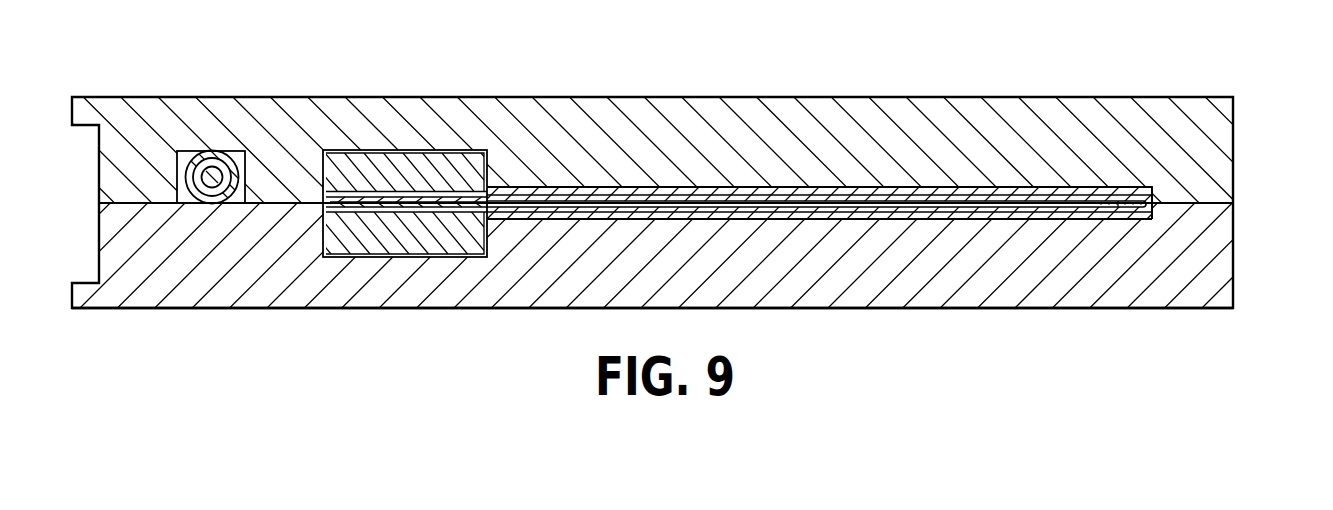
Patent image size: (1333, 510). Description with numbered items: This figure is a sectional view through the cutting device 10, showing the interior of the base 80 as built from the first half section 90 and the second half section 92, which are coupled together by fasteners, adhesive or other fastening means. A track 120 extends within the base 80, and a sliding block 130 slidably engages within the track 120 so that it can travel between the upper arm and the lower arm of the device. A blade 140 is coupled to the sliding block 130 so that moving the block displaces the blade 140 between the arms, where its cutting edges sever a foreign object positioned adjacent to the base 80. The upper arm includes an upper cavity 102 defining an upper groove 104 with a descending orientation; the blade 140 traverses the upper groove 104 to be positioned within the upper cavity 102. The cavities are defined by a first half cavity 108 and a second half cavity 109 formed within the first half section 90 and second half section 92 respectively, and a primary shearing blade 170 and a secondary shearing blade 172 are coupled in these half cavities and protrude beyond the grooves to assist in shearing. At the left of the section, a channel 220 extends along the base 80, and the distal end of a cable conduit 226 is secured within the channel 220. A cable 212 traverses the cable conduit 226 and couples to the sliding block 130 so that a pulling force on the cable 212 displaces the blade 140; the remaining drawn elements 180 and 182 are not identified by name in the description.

The cutting device 10 is at (998, 97).
The second half section 92 is at (551, 97).
The first half section 90 is at (512, 309).
The base 80 is at (270, 309).
The track 120 is at (380, 150).
The sliding block 130 is at (377, 247).
The blade 140 is at (688, 197).
The second half cavity 109 is at (823, 192).
The first half cavity 108 is at (946, 216).
The secondary shearing blade 172 is at (915, 192).
The primary shearing blade 170 is at (835, 212).
The fiber coating 182 is at (1077, 197).
The fiber core 180 is at (1048, 210).
The upper cavity 102 is at (1153, 196).
The upper groove 104 is at (1155, 208).
The channel 220 is at (182, 150).
The cable conduit 226 is at (222, 152).
The cable 212 is at (213, 187).